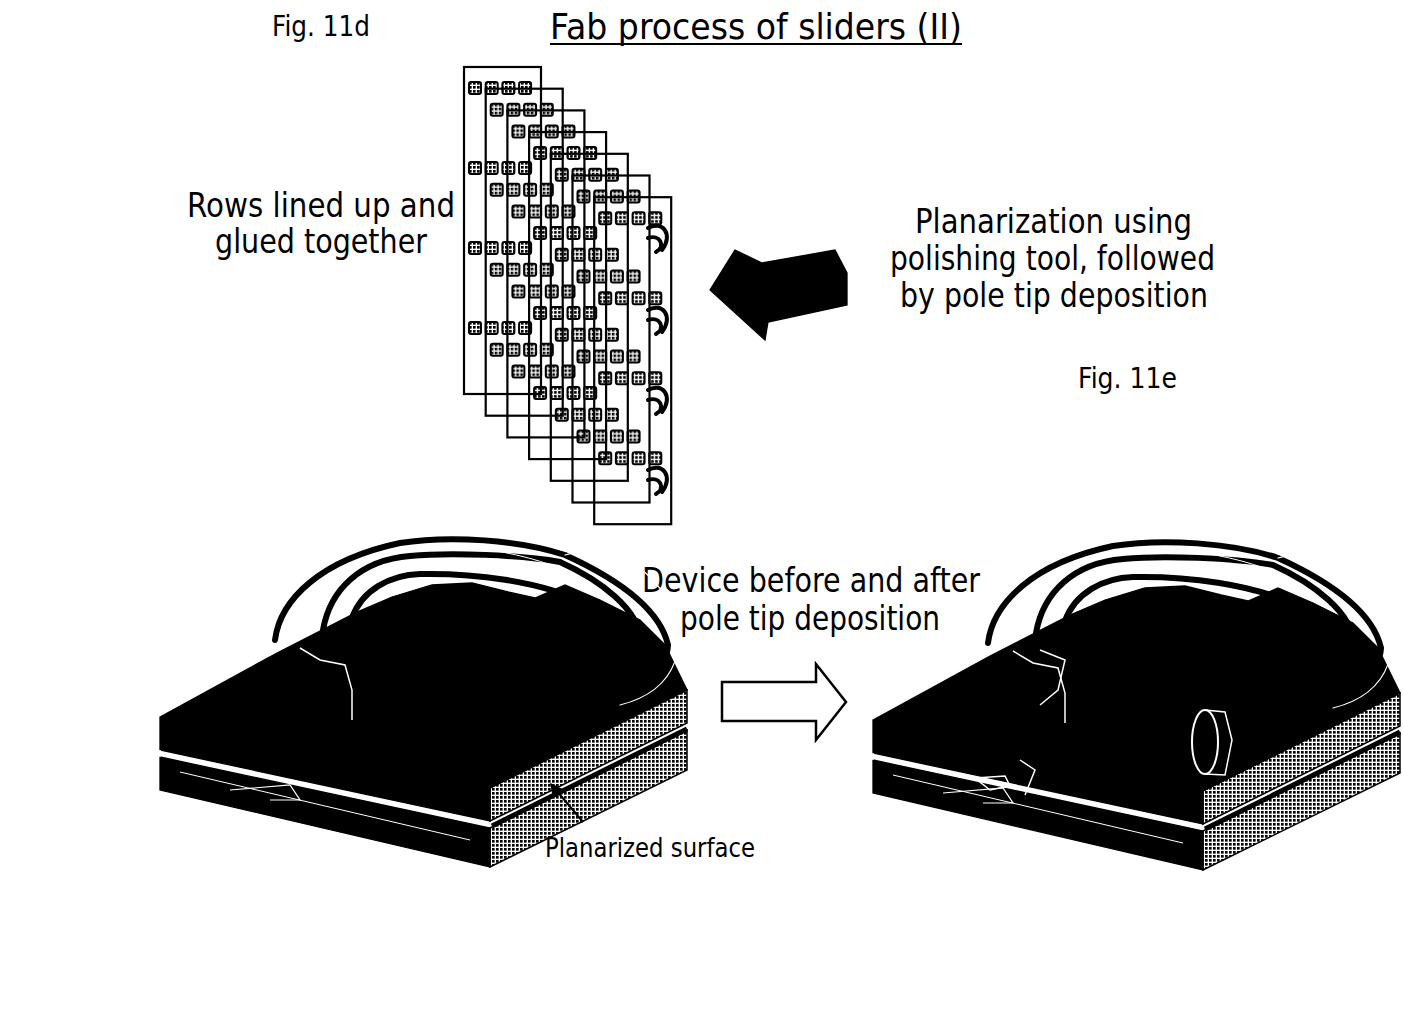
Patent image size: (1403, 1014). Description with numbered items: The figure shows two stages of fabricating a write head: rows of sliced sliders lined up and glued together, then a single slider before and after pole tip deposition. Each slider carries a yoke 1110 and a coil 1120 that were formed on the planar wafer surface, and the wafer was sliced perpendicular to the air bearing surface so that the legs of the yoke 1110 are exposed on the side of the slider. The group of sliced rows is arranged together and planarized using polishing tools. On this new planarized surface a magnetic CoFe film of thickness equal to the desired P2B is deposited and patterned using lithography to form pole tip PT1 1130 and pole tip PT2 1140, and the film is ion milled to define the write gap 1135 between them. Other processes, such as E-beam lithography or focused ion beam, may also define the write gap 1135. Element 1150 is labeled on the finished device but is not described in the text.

In FIG. 11D, the yoke 1110 is at (275, 640).
In FIG. 11E, the yoke 1110 is at (1093, 660).
In FIG. 11D, the coil 1120 is at (575, 590).
In FIG. 11E, the coil 1120 is at (1253, 560).
In FIG. 11E, the pole tip PT1 1130 is at (1093, 720).
In FIG. 11E, the write gap 1135 is at (1237, 777).
In FIG. 11E, the pole tip PT2 1140 is at (1240, 778).
In FIG. 11E, the read element 1150 is at (1000, 787).